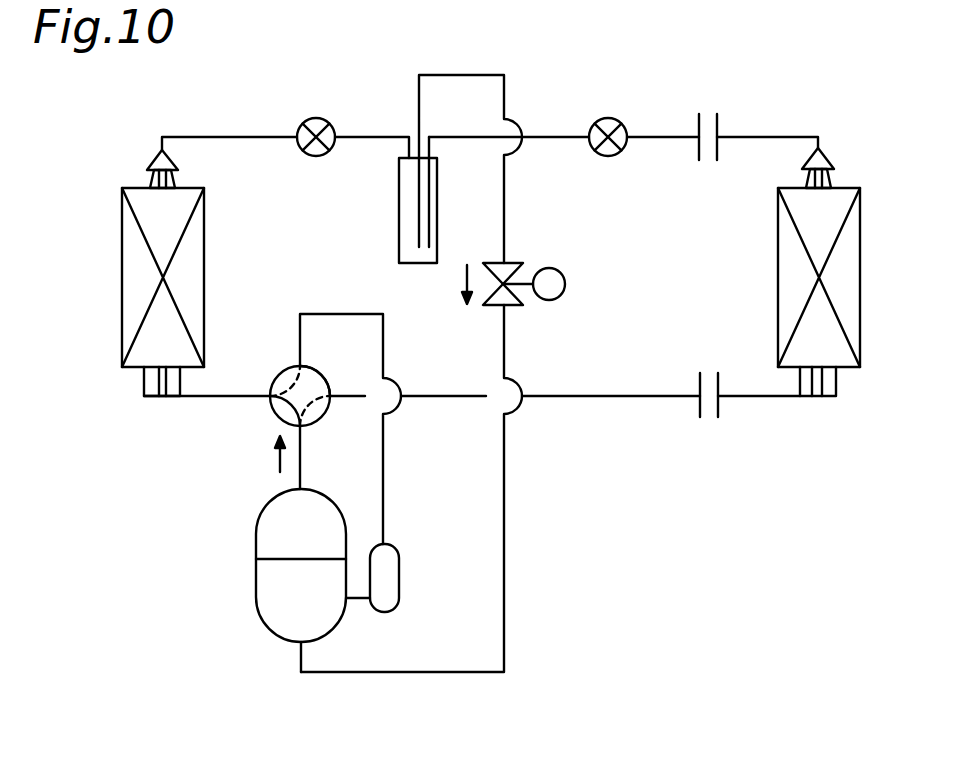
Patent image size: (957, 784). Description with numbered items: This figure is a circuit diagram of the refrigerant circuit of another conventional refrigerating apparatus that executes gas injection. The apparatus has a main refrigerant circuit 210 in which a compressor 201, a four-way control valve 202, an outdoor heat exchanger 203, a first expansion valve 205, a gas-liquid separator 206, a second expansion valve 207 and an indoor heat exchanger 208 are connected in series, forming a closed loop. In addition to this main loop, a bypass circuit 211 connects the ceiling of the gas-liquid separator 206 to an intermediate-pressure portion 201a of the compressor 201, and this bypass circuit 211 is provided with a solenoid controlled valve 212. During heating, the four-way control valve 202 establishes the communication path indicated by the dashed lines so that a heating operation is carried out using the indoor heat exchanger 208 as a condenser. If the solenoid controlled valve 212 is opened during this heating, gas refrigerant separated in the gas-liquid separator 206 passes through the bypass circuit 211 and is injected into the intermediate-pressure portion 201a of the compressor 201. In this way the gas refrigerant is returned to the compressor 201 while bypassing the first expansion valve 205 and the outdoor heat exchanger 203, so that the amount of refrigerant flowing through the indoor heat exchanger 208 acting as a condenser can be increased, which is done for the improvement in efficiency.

The compressor 201 is at (256, 573).
The intermediate-pressure portion 201a is at (299, 646).
The four-way control valve 202 is at (271, 411).
The outdoor heat exchanger 203 is at (122, 256).
The first expansion valve 205 is at (305, 151).
The gas-liquid separator 206 is at (399, 230).
The second expansion valve 207 is at (608, 157).
The indoor heat exchanger 208 is at (778, 256).
The main refrigerant circuit 210 is at (631, 398).
The bypass circuit 211 is at (505, 551).
The solenoid controlled valve 212 is at (514, 263).